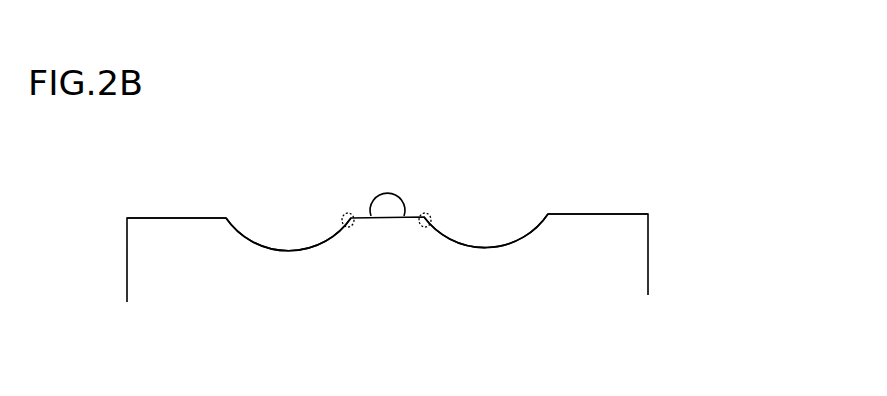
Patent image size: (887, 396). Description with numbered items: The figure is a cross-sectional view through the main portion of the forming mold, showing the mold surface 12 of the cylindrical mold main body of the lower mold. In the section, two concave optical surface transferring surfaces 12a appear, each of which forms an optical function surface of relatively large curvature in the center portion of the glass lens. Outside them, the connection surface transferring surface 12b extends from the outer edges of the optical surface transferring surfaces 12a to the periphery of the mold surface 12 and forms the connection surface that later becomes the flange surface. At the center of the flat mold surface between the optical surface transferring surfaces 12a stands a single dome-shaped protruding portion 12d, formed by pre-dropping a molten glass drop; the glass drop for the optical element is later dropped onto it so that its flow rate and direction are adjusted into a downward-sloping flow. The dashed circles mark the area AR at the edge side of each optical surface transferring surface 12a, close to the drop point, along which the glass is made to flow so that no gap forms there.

The mold surface 12 is at (614, 132).
The optical surface transferring surface 12a is at (258, 243).
The connection surface transferring surface 12b is at (168, 218).
The protruding portion 12d is at (388, 198).
The area AR is at (345, 213).